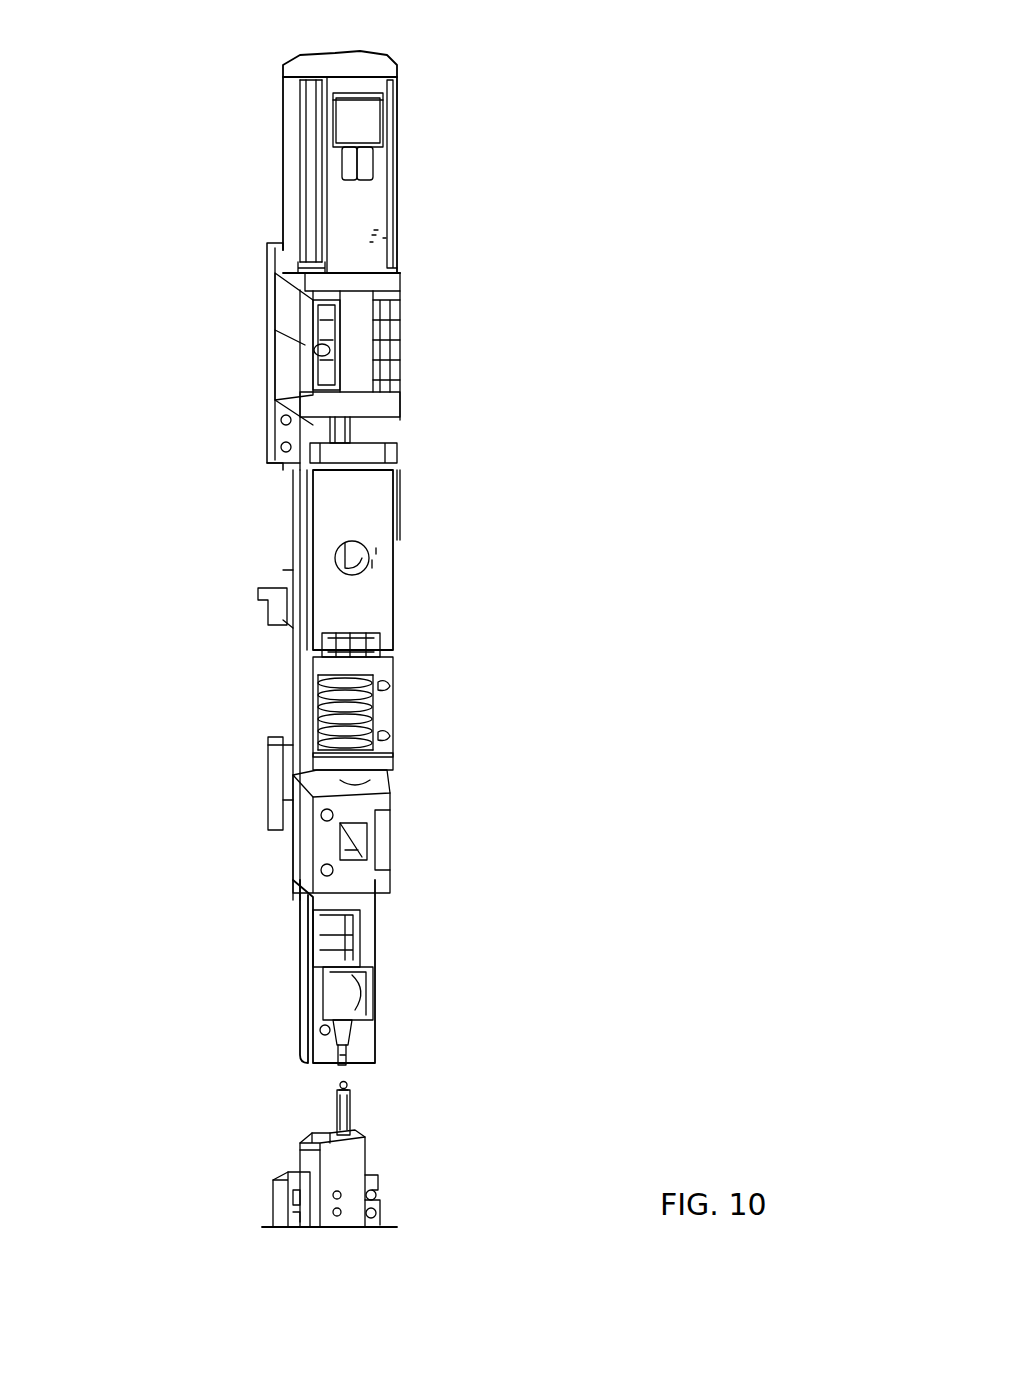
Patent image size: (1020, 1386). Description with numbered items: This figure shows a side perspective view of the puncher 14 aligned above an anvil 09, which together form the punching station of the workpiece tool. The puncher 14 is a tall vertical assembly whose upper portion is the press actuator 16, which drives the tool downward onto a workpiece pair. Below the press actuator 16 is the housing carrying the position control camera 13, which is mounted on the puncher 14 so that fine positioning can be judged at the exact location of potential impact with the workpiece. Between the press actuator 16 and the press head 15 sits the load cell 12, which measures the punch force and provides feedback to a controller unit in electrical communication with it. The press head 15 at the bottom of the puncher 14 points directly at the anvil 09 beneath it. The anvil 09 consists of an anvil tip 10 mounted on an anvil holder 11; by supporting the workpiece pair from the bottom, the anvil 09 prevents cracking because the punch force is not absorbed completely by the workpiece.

The puncher 14 is at (500, 45).
The press actuator 16 is at (248, 178).
The position control camera 13 is at (348, 615).
The load cell 12 is at (400, 967).
The press head 15 is at (360, 1058).
The anvil 09 is at (212, 1177).
The anvil tip 10 is at (328, 1107).
The anvil holder 11 is at (360, 1108).